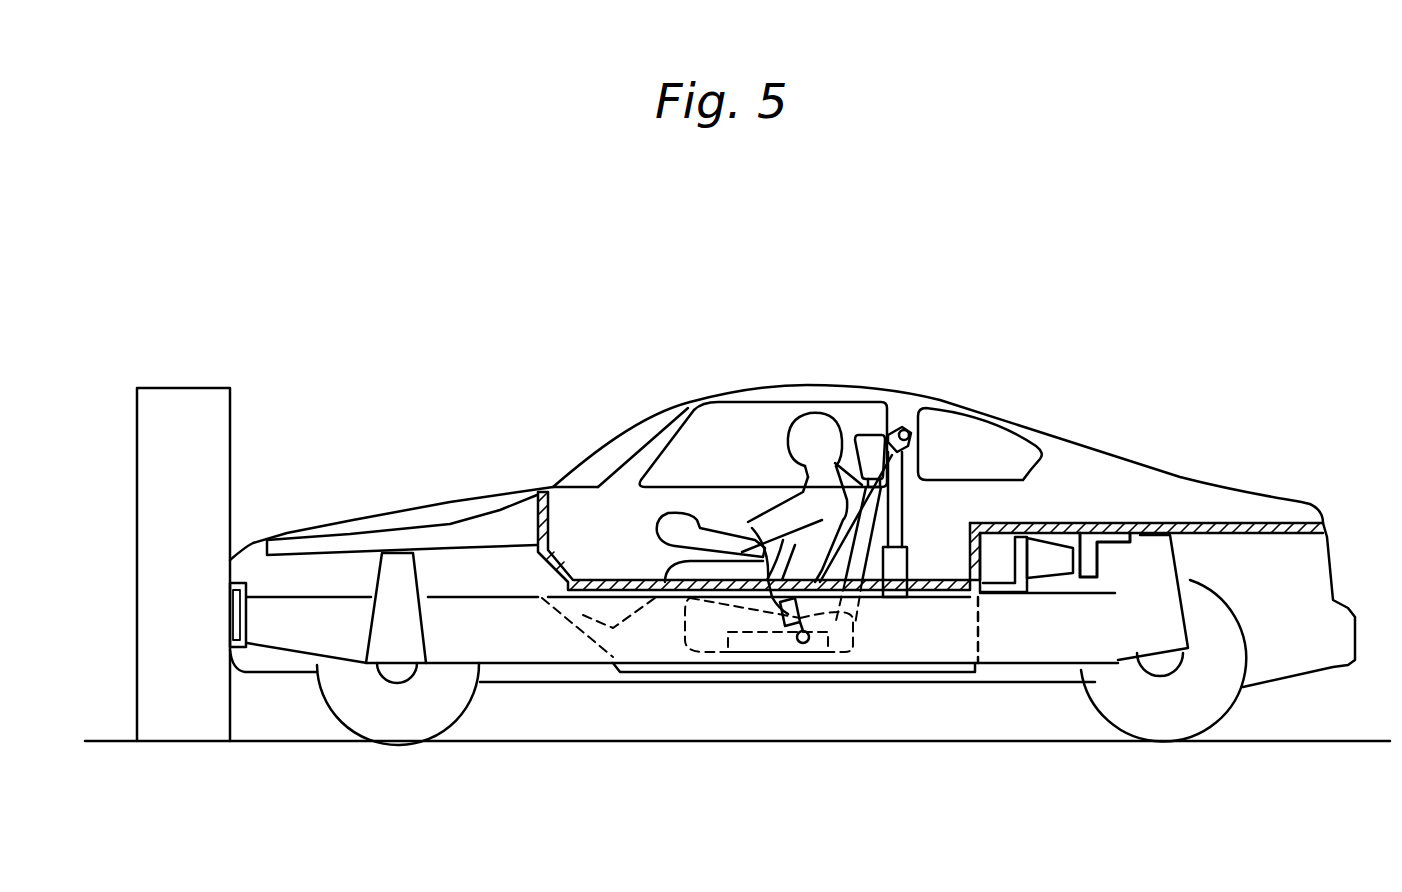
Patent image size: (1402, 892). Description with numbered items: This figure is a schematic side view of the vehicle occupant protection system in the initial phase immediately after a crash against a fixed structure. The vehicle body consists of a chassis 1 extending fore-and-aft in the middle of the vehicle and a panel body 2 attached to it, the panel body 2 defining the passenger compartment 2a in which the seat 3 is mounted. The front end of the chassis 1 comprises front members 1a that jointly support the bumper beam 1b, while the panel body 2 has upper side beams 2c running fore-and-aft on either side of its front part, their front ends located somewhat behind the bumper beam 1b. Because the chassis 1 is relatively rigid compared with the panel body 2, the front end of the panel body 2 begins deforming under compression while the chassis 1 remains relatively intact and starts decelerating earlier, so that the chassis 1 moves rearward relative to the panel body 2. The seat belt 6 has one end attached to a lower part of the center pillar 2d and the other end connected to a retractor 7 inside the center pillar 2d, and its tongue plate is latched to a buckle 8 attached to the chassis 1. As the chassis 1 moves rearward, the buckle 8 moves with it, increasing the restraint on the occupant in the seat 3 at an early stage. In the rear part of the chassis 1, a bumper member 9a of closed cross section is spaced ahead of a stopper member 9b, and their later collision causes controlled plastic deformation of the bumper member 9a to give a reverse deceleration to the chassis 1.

The chassis 1 is at (536, 650).
The front members 1a is at (287, 640).
The bumper beam 1b is at (235, 583).
The panel body 2 is at (1047, 430).
The passenger compartment 2a is at (754, 471).
The upper side beams 2c is at (473, 528).
The center pillar 2d is at (912, 467).
The seat 3 is at (870, 518).
The seat belt 6 is at (752, 528).
The retractor 7 is at (900, 563).
The buckle 8 is at (807, 610).
The bumper member 9a is at (1050, 552).
The stopper member 9b is at (1097, 557).